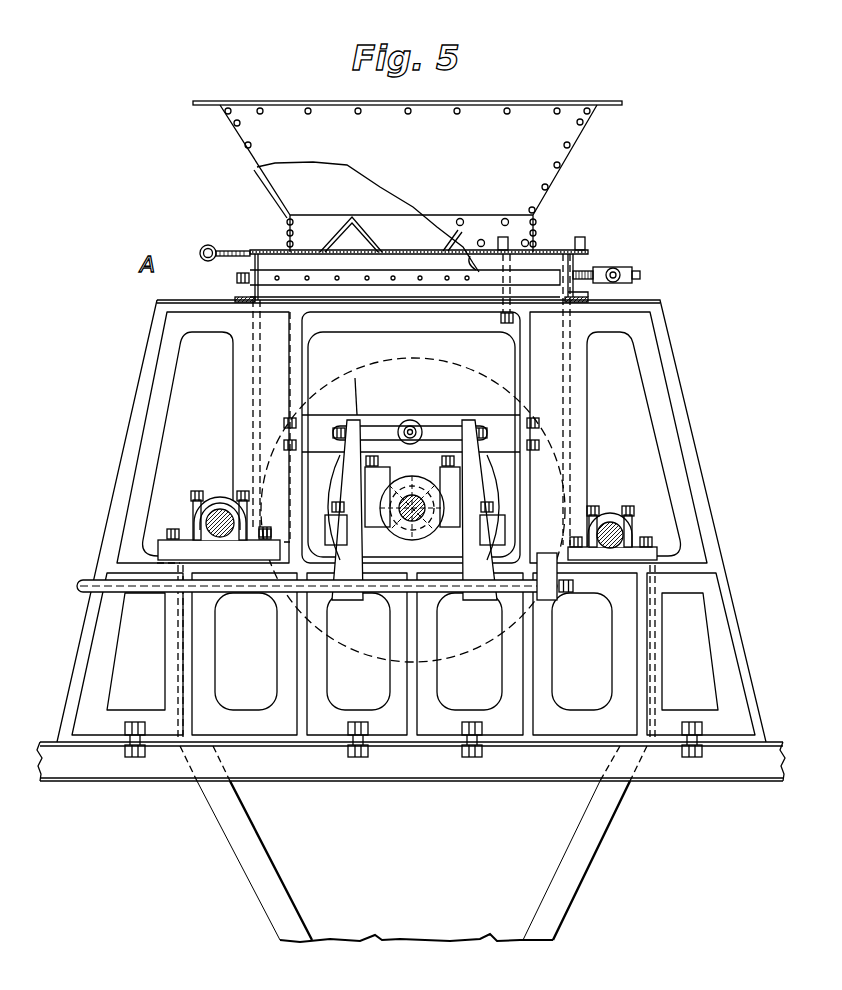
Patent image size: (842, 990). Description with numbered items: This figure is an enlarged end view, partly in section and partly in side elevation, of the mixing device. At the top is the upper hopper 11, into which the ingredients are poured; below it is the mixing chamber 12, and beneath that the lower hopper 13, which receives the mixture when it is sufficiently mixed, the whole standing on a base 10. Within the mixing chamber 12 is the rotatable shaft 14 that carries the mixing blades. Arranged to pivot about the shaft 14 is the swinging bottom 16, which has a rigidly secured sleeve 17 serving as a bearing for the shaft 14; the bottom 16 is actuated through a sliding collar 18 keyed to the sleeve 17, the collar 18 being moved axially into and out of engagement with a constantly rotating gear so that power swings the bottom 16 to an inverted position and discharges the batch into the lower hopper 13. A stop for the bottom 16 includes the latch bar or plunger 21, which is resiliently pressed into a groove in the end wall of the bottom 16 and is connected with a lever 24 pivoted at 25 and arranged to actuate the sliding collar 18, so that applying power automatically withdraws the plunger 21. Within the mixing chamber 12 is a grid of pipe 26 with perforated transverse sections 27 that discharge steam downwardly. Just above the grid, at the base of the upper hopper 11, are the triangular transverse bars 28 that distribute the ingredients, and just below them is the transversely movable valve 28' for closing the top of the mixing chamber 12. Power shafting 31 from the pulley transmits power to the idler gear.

The base beam 10 is at (763, 742).
The upper hopper 11 is at (407, 186).
The mixing chamber 12 is at (572, 428).
The lower hopper 13 is at (437, 926).
The rotatable shaft 14 is at (415, 507).
The swinging bottom 16 is at (468, 646).
The sleeve 17 is at (427, 534).
The sliding collar 18 is at (393, 535).
The latch bar or plunger 21 is at (416, 428).
The lever 24 is at (358, 466).
The pivot 25 is at (557, 594).
The grid of pipe 26 is at (609, 270).
The transverse sections 27 is at (385, 278).
The triangular transverse bars 28 is at (382, 234).
The transversely movable valve 28' is at (229, 242).
The power shafting 31 is at (607, 526).